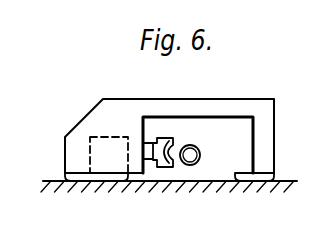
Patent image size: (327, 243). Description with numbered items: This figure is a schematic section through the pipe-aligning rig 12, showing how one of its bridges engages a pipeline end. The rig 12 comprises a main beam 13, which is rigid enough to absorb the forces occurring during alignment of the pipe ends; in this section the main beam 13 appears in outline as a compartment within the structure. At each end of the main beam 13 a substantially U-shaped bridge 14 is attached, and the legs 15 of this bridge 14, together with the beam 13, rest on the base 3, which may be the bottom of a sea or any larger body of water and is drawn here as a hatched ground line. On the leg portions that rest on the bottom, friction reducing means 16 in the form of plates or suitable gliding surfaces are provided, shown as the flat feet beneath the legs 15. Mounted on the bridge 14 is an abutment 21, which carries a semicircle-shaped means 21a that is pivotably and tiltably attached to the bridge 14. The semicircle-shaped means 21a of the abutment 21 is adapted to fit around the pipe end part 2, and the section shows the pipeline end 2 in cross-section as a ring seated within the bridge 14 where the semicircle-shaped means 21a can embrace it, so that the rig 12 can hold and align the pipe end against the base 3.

The pipeline end 2 is at (200, 151).
The base 3 is at (284, 180).
The rig 12 is at (139, 94).
The main beam 13 is at (105, 137).
The U-shaped bridge 14 is at (222, 103).
The legs 15 is at (77, 146).
The friction reducing means 16 is at (107, 176).
The abutment 21 is at (147, 160).
The semicircle-shaped means 21a is at (160, 138).